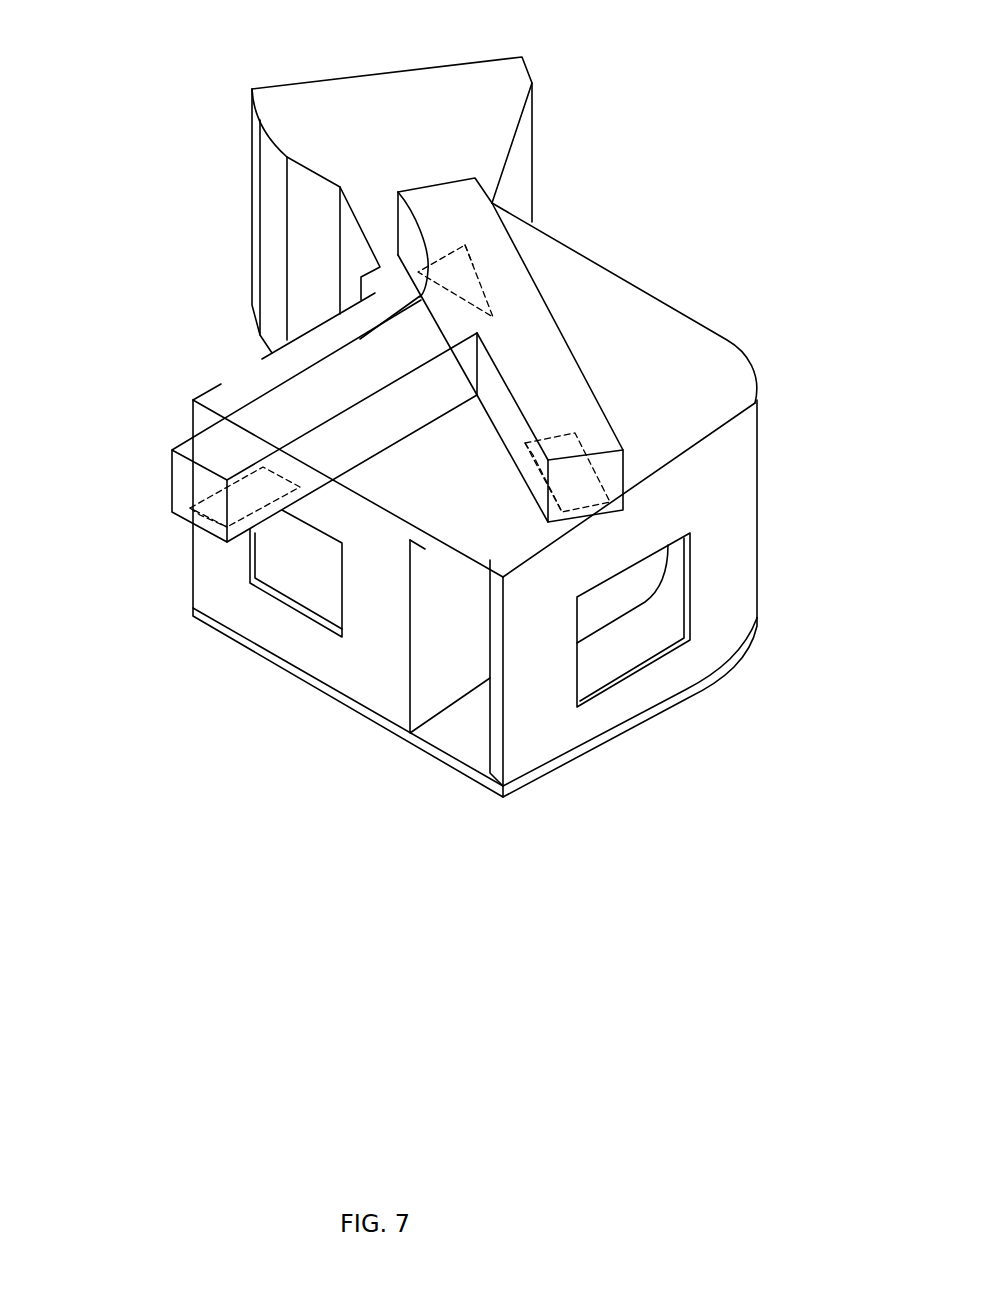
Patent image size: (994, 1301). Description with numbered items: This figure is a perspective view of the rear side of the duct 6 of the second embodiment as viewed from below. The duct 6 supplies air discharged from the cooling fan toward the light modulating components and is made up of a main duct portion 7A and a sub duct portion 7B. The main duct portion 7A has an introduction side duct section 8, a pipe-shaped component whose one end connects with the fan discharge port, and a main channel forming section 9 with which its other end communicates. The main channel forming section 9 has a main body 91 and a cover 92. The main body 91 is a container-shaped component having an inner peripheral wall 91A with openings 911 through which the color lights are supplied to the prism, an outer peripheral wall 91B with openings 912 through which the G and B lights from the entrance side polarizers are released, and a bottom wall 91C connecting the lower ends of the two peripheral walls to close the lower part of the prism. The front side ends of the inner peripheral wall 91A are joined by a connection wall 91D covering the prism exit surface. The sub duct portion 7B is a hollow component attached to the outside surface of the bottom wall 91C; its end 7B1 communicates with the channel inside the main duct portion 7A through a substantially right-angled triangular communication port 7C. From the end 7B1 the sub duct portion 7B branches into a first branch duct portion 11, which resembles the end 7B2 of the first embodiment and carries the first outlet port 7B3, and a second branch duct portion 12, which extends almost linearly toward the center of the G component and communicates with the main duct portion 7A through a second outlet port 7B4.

The duct 6 is at (105, 293).
The main duct portion 7A is at (236, 398).
The sub duct portion 7B is at (290, 412).
The end 7B1 is at (433, 183).
The end 7B2 is at (186, 470).
The outlet port 7B3 is at (200, 515).
The second outlet port 7B4 is at (597, 472).
The communication port 7C is at (468, 250).
The introduction side duct section 8 is at (477, 127).
The main channel forming section 9 is at (455, 535).
The main body 91 is at (455, 522).
The inner peripheral wall 91A is at (283, 643).
The outer peripheral wall 91B is at (523, 715).
The bottom wall 91C is at (640, 340).
The connection wall 91D is at (307, 336).
The opening 911 is at (200, 617).
The opening 912 is at (647, 660).
The cover 92 is at (450, 743).
The first branch duct portion 11 is at (377, 435).
The second branch duct portion 12 is at (508, 442).